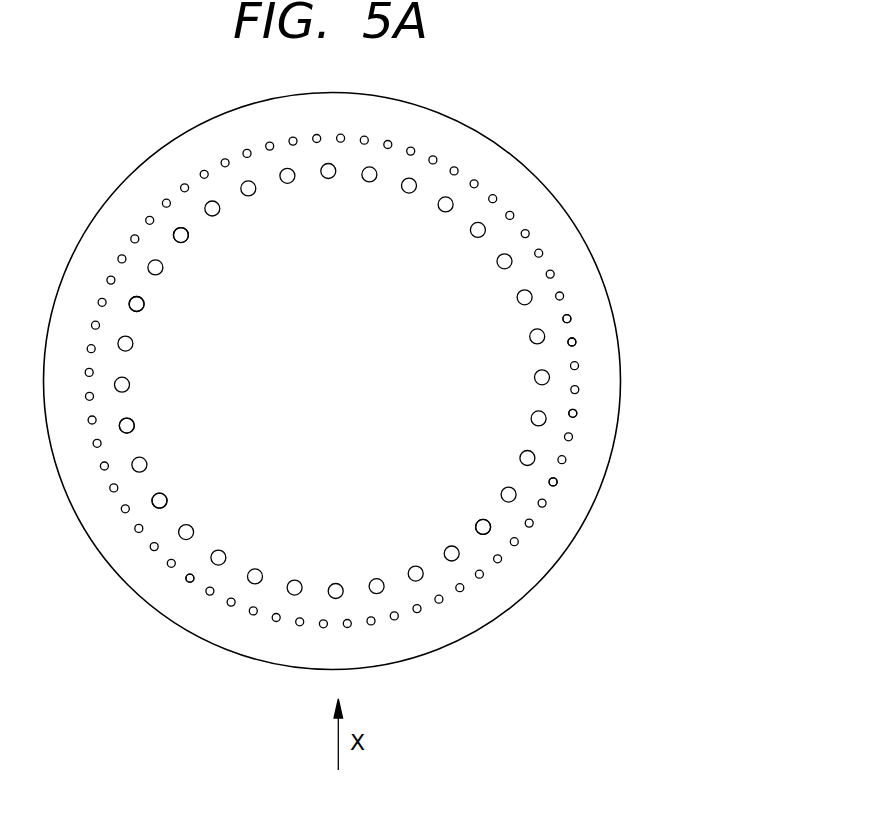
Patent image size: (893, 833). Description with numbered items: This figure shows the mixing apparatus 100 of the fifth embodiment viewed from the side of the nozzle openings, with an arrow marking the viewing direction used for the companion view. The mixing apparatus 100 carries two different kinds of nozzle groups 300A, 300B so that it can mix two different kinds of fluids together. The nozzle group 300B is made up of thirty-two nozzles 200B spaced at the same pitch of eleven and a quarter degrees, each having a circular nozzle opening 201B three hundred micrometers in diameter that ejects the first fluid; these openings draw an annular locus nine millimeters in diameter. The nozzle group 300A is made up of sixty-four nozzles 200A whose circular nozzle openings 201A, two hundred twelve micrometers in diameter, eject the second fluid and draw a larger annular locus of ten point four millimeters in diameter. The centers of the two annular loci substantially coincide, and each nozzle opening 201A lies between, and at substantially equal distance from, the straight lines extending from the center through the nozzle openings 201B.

The mixing apparatus 100 is at (555, 198).
The nozzle 200A is at (553, 482).
The nozzle 200B is at (483, 527).
The nozzle opening 201A is at (190, 578).
The nozzle opening 201B is at (160, 501).
The nozzle group 300A is at (567, 319).
The nozzle group 300B is at (127, 426).